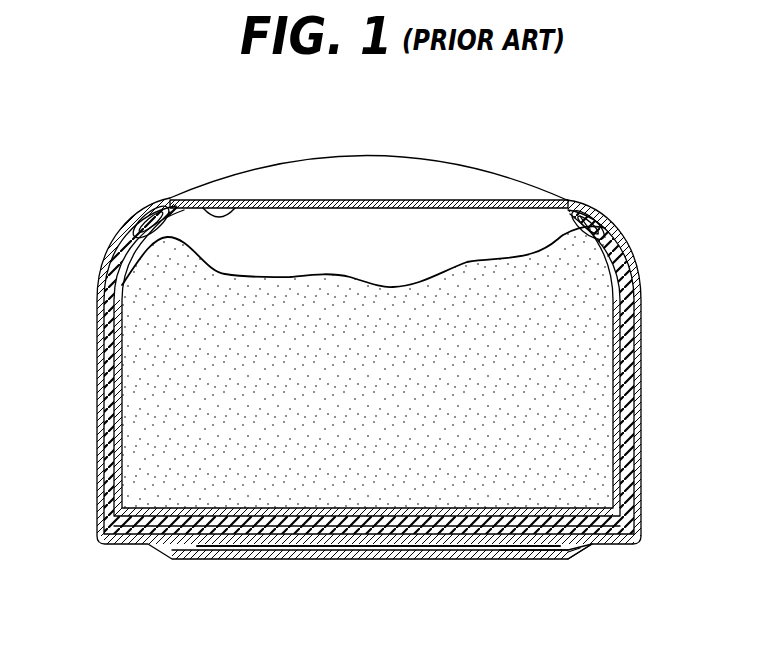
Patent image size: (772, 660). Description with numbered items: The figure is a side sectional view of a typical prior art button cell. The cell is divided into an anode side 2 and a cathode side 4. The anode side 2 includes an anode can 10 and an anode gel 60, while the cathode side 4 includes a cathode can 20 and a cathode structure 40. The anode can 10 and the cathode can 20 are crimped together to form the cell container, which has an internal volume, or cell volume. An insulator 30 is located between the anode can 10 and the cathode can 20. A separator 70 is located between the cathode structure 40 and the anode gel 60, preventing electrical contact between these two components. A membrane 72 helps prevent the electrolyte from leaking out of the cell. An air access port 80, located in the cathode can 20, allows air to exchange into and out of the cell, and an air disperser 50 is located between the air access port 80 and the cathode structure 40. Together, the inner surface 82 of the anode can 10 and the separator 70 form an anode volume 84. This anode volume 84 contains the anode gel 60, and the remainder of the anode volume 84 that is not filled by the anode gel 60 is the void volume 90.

The anode side 2 is at (350, 157).
The cathode side 4 is at (342, 562).
The anode can 10 is at (405, 190).
The cathode can 20 is at (138, 548).
The insulator 30 is at (637, 315).
The cathode structure 40 is at (520, 516).
The air disperser 50 is at (536, 562).
The anode gel 60 is at (572, 360).
The separator 70 is at (112, 502).
The membrane 72 is at (606, 538).
The air access port 80 is at (484, 561).
The inner surface 82 is at (232, 212).
The anode volume 84 is at (197, 304).
The void volume 90 is at (278, 215).